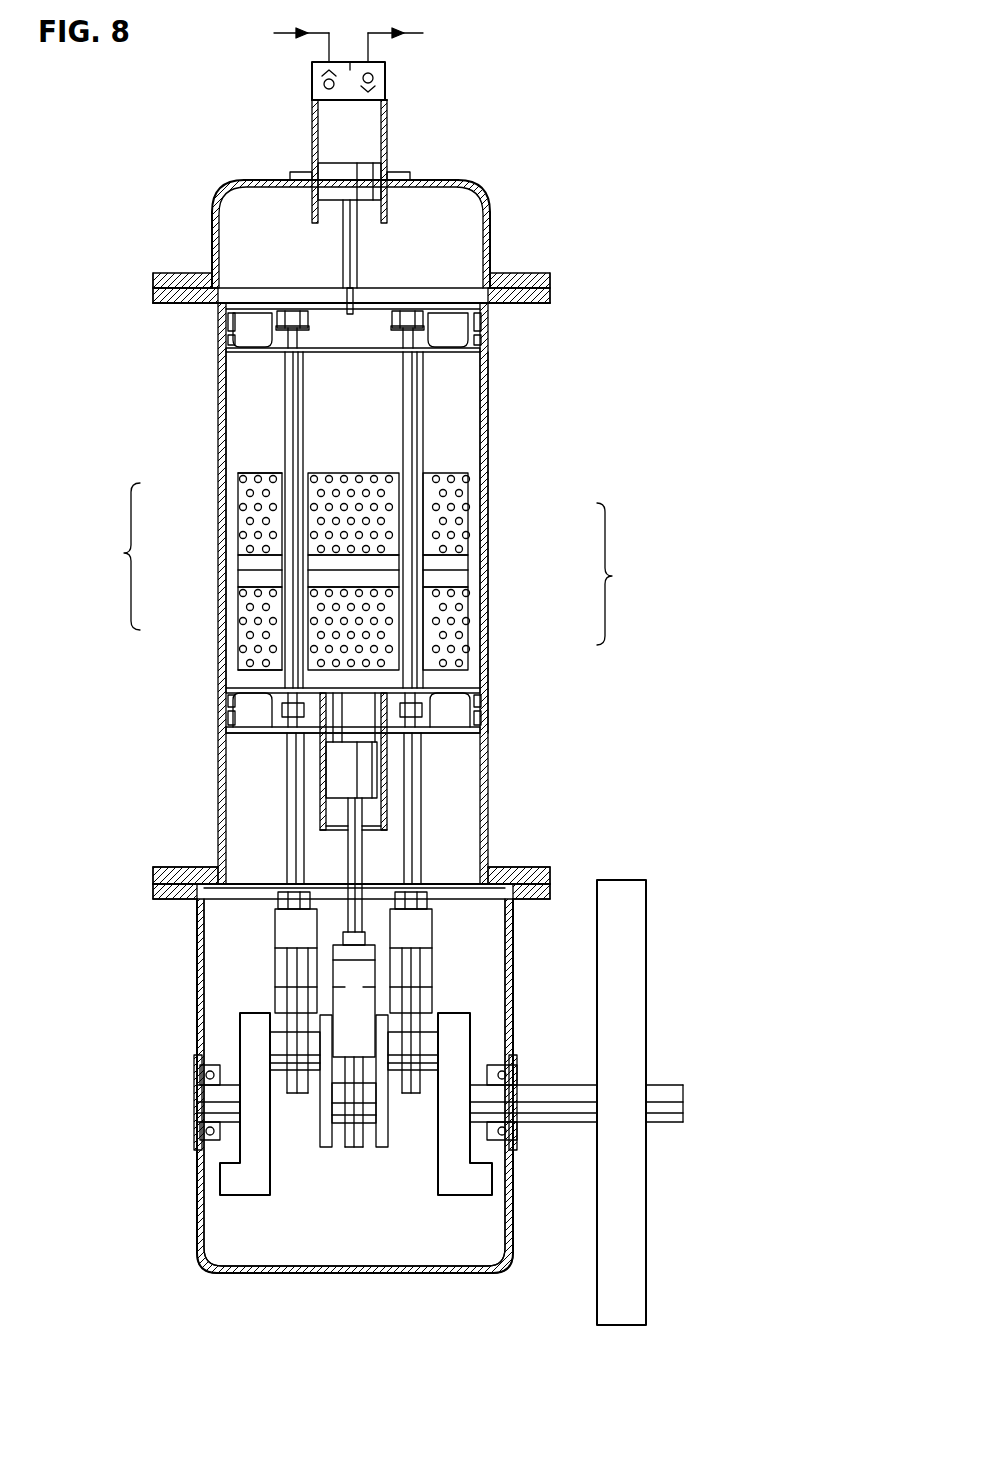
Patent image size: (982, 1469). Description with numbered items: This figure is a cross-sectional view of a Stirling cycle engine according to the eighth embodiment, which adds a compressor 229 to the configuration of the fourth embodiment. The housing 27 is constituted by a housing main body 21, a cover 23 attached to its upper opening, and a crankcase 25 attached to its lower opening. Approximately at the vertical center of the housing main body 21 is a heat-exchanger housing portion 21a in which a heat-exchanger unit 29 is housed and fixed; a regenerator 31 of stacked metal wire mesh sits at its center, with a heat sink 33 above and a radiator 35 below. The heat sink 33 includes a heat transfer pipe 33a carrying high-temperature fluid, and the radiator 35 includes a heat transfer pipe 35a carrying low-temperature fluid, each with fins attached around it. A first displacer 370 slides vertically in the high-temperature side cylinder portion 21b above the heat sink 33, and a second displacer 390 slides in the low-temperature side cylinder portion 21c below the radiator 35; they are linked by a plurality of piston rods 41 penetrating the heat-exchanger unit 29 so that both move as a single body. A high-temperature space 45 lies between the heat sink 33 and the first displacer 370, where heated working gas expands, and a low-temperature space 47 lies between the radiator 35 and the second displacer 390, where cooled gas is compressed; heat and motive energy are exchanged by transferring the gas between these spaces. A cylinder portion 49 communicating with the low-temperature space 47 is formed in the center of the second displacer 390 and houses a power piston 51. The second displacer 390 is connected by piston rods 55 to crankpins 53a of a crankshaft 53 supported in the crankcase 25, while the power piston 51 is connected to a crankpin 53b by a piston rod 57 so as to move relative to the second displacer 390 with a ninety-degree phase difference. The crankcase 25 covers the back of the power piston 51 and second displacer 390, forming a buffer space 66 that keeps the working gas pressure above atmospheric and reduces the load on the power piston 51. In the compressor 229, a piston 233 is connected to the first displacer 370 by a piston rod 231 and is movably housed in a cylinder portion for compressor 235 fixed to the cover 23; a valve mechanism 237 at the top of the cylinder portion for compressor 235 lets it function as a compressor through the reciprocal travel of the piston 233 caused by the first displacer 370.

The cover 23 is at (453, 182).
The crankcase 25 is at (358, 1276).
The housing 27 is at (490, 367).
The heat-exchanger unit 29 is at (282, 550).
The regenerator 31 is at (242, 560).
The heat sink 33 is at (237, 498).
The heat transfer pipe 33a is at (243, 477).
The radiator 35 is at (237, 604).
The heat transfer pipe 35a is at (242, 648).
The first displacer 370 is at (253, 352).
The second displacer 390 is at (221, 682).
The piston rods 41 is at (298, 397).
The high-temperature space 45 is at (473, 415).
The low-temperature space 47 is at (455, 725).
The cylinder portion 49 is at (322, 748).
The power piston 51 is at (370, 775).
The crankshaft 53 is at (356, 1180).
The crankpins 53a is at (277, 1072).
The crankpin 53b is at (370, 1123).
The piston rods 55 is at (290, 790).
The piston rod 57 is at (347, 846).
The buffer space 66 is at (428, 1240).
The housing main body 21 is at (565, 542).
The heat-exchanger housing portion 21a is at (490, 577).
The high-temperature side cylinder portion 21b is at (490, 438).
The low-temperature side cylinder portion 21c is at (488, 707).
The compressor 229 is at (393, 91).
The piston rod 231 is at (343, 250).
The piston 233 is at (330, 163).
The cylinder portion for compressor 235 is at (388, 125).
The valve mechanism 237 is at (350, 62).